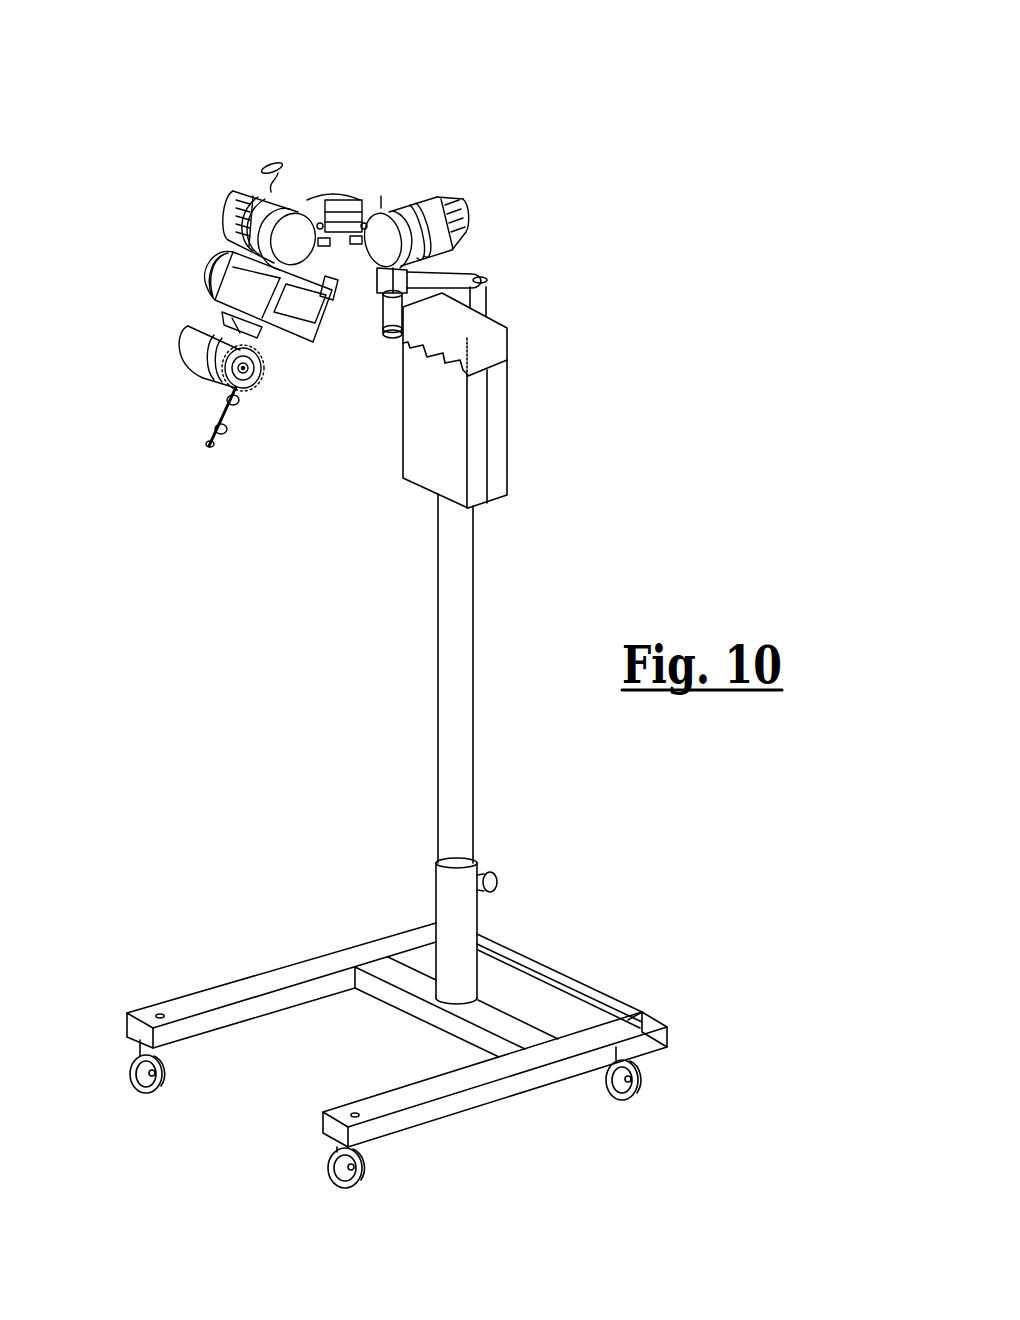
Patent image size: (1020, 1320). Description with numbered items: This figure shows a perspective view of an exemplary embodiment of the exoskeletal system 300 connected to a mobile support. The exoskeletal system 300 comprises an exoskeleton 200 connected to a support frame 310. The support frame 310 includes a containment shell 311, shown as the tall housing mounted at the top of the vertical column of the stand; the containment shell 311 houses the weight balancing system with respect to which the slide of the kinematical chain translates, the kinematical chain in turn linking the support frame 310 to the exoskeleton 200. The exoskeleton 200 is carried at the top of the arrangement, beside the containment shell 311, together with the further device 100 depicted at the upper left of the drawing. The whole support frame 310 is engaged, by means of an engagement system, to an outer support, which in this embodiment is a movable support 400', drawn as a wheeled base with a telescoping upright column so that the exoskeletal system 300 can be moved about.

The tool unit with gear and chain 100 is at (172, 279).
The exoskeleton 200 is at (173, 165).
The exoskeletal system 300 is at (582, 103).
The support frame 310 is at (529, 384).
The containment shell 311 is at (497, 448).
The movable support 400' is at (397, 952).